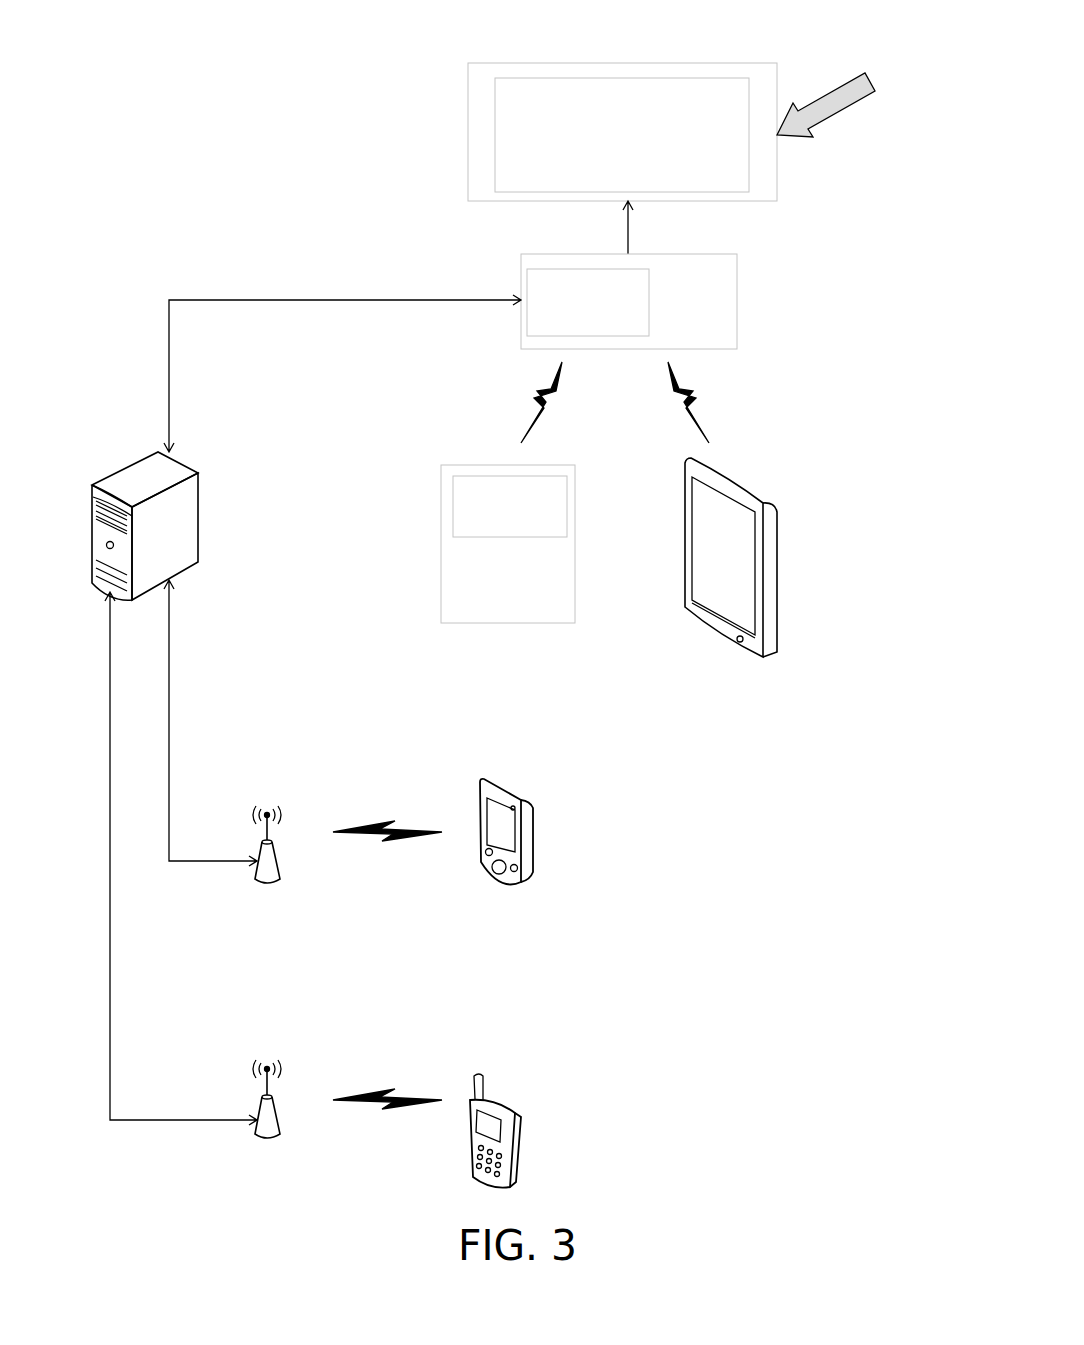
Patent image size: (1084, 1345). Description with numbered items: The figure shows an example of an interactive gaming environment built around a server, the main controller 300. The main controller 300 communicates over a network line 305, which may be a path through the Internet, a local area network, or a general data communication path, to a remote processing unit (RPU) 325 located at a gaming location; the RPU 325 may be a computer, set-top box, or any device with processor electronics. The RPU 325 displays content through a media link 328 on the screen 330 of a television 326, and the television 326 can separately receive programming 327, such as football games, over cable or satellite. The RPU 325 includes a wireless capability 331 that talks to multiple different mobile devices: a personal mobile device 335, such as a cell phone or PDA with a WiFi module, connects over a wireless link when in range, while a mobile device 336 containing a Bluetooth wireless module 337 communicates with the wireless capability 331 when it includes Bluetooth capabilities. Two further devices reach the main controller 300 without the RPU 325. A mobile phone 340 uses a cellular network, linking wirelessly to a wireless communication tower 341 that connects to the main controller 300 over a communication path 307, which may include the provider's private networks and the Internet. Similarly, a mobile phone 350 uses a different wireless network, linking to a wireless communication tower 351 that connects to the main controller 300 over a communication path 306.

The main controller 300 is at (200, 489).
The network line 305 is at (169, 402).
The communication path 306 is at (111, 950).
The communication path 307 is at (169, 730).
The remote processing unit 325 is at (715, 254).
The television 326 is at (708, 63).
The programming 327 is at (871, 82).
The media link 328 is at (631, 244).
The screen 330 is at (548, 78).
The wireless capability 331 is at (548, 269).
The mobile device 335 is at (777, 582).
The mobile device 336 is at (575, 556).
The Bluetooth wireless module 337 is at (567, 499).
The mobile phone 340 is at (533, 864).
The wireless communication tower 341 is at (276, 883).
The mobile phone 350 is at (520, 1166).
The wireless communication tower 351 is at (271, 1142).